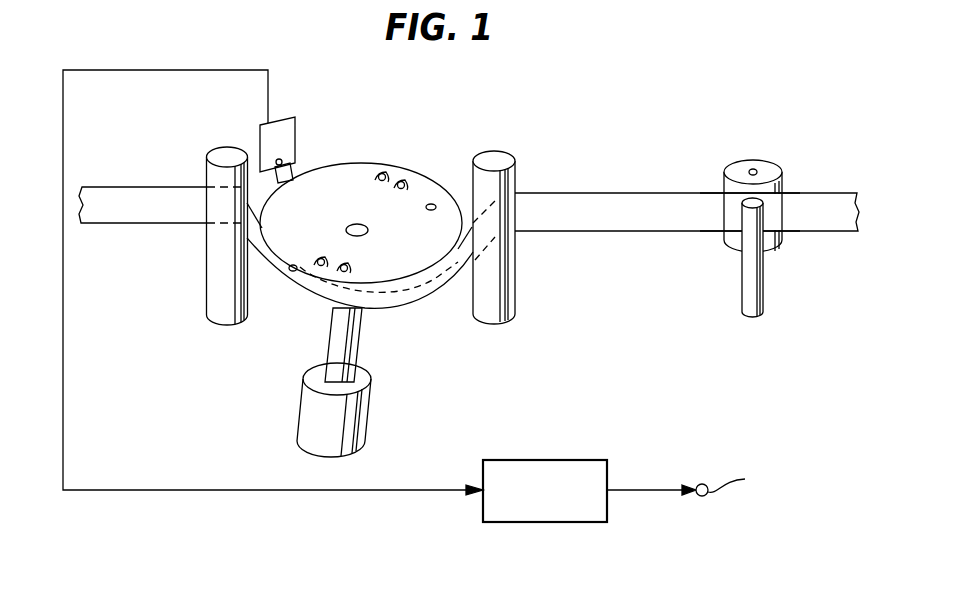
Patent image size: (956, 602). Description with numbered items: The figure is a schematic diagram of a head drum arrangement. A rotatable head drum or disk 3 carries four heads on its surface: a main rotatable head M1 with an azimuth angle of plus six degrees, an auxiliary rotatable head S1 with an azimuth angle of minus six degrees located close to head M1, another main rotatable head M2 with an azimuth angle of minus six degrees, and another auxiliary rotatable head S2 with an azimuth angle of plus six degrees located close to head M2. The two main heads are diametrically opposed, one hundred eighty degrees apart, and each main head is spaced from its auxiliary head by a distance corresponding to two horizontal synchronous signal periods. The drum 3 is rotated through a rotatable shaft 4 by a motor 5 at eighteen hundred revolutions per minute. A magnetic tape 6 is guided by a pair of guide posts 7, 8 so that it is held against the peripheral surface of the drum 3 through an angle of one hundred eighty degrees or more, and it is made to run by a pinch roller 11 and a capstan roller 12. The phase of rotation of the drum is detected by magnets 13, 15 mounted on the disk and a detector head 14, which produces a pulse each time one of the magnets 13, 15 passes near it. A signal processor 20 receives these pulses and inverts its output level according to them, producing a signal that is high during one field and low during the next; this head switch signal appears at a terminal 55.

The rotatable head drum 3 is at (331, 172).
The rotatable shaft 4 is at (362, 338).
The motor 5 is at (373, 405).
The magnetic tape 6 is at (600, 203).
The guide post 7 is at (227, 152).
The guide post 8 is at (505, 160).
The pinch roller 11 is at (773, 167).
The capstan roller 12 is at (766, 285).
The magnet 13 is at (434, 204).
The detector head 14 is at (285, 125).
The magnet 15 is at (292, 272).
The signal processor 20 is at (548, 460).
The terminal 55 is at (691, 485).
The main rotatable head M1 is at (383, 172).
The auxiliary rotatable head S1 is at (404, 180).
The auxiliary rotatable head S2 is at (320, 260).
The main rotatable head M2 is at (357, 272).